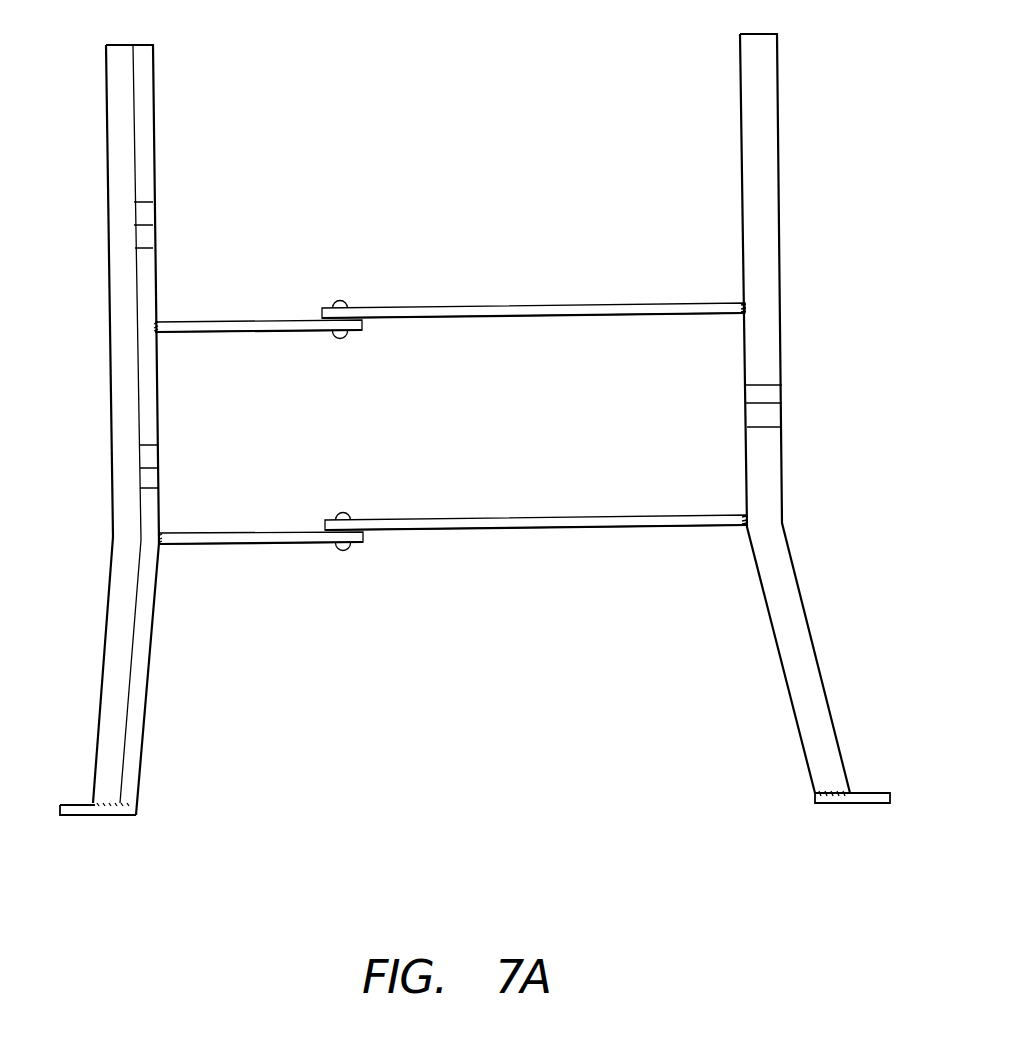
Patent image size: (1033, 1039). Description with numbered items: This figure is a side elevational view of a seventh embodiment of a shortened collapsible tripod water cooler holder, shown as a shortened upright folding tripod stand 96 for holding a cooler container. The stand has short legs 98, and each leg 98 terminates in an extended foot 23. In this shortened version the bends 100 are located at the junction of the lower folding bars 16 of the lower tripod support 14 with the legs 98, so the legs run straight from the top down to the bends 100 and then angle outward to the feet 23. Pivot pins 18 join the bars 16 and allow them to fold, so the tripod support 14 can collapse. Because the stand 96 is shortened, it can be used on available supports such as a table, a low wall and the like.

The shortened upright folding tripod stand 96 is at (530, 117).
The short legs 98 is at (145, 138).
The bends 100 is at (110, 537).
The lower tripod support 14 is at (536, 492).
The lower folding bars 16 is at (265, 330).
The pivot pins 18 is at (338, 302).
The extended foot 23 is at (860, 793).